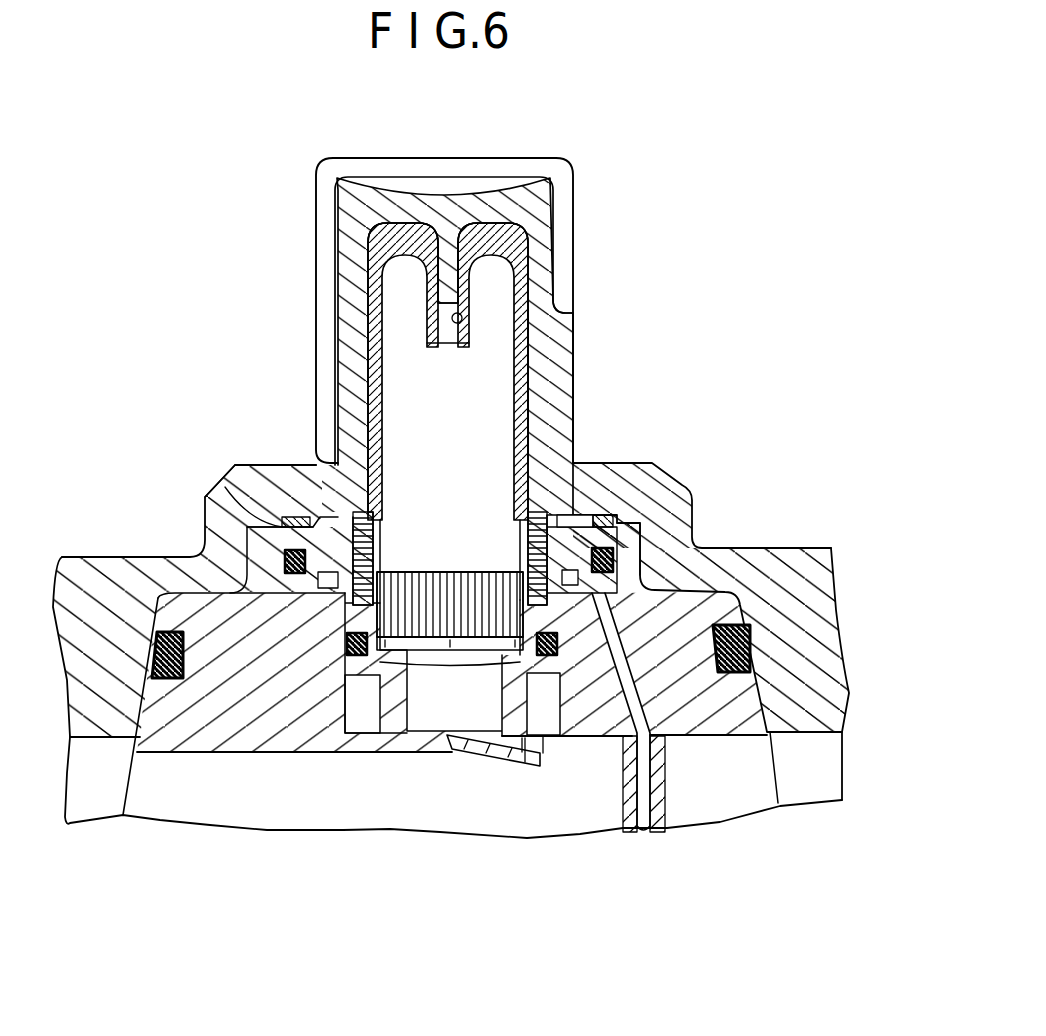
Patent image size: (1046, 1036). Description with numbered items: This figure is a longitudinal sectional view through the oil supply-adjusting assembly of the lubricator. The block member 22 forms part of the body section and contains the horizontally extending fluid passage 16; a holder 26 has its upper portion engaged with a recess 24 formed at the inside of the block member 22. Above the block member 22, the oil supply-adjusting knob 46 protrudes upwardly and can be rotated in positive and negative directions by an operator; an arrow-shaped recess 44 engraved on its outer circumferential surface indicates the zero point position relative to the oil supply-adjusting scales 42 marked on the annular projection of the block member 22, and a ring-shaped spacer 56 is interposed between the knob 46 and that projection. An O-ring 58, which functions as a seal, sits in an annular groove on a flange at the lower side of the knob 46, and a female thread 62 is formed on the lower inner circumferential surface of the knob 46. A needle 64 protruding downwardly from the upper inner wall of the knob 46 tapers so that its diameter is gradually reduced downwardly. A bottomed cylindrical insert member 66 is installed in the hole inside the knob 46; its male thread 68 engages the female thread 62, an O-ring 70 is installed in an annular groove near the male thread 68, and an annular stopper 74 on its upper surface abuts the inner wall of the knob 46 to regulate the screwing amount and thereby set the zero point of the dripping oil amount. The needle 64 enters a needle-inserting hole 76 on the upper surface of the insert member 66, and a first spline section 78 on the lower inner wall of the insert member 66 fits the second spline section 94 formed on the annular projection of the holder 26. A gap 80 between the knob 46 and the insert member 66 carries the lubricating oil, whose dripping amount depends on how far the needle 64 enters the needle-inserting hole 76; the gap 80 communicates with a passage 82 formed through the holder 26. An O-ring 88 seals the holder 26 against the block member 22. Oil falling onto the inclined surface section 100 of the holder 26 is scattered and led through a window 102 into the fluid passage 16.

The fluid passage 16 is at (405, 840).
The block member 22 is at (824, 596).
The recess 24 is at (727, 590).
The holder 26 is at (697, 713).
The oil supply-adjusting scales 42 is at (278, 463).
The arrow-shaped recess 44 is at (328, 327).
The oil supply-adjusting knob 46 is at (574, 159).
The ring-shaped spacer 56 is at (222, 486).
The O-ring 58 is at (205, 522).
The female thread 62 is at (380, 603).
The needle 64 is at (448, 287).
The cylindrical insert member 66 is at (522, 362).
The male thread 68 is at (592, 515).
The O-ring 70 is at (350, 656).
The annular stopper 74 is at (480, 233).
The needle-inserting hole 76 is at (460, 318).
The first spline section 78 is at (525, 762).
The gap 80 is at (530, 412).
The passage 82 is at (648, 833).
The O-ring 88 is at (157, 632).
The second spline section 94 is at (450, 593).
The inclined surface section 100 is at (490, 758).
The window 102 is at (541, 768).